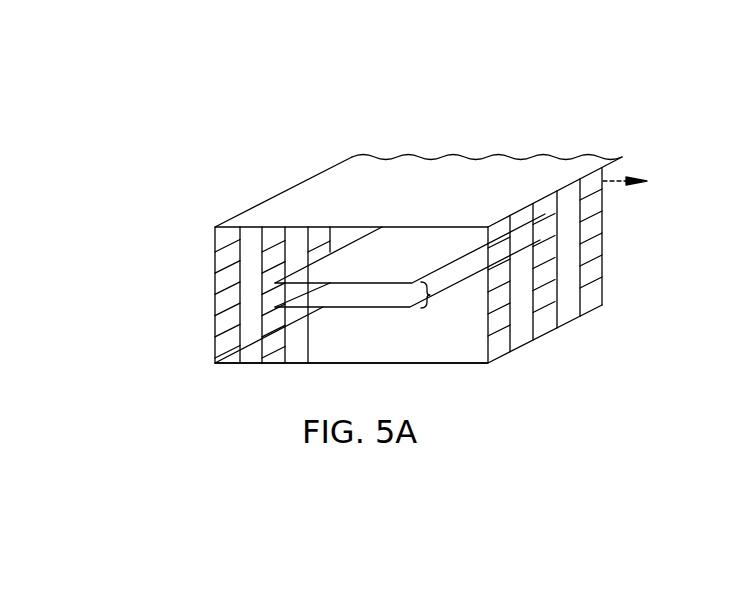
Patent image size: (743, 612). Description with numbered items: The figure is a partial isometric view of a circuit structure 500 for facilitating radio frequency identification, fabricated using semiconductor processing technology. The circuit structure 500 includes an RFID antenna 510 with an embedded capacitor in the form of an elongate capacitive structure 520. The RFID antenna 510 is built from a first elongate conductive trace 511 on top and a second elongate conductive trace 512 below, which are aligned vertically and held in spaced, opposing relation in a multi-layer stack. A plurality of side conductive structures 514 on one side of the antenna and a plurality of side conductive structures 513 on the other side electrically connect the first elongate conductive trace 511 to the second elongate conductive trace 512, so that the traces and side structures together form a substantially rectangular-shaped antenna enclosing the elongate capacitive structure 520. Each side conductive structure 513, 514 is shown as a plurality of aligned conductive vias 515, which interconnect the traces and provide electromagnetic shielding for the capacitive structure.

The circuit structure 500 is at (393, 97).
The RFID antenna 510 is at (425, 181).
The first elongate conductive trace 511 is at (295, 203).
The second elongate conductive trace 512 is at (340, 355).
The side conductive structures 513 is at (605, 203).
The side conductive structures 514 is at (216, 243).
The aligned conductive vias 515 is at (215, 307).
The elongate capacitive structure 520 is at (430, 295).